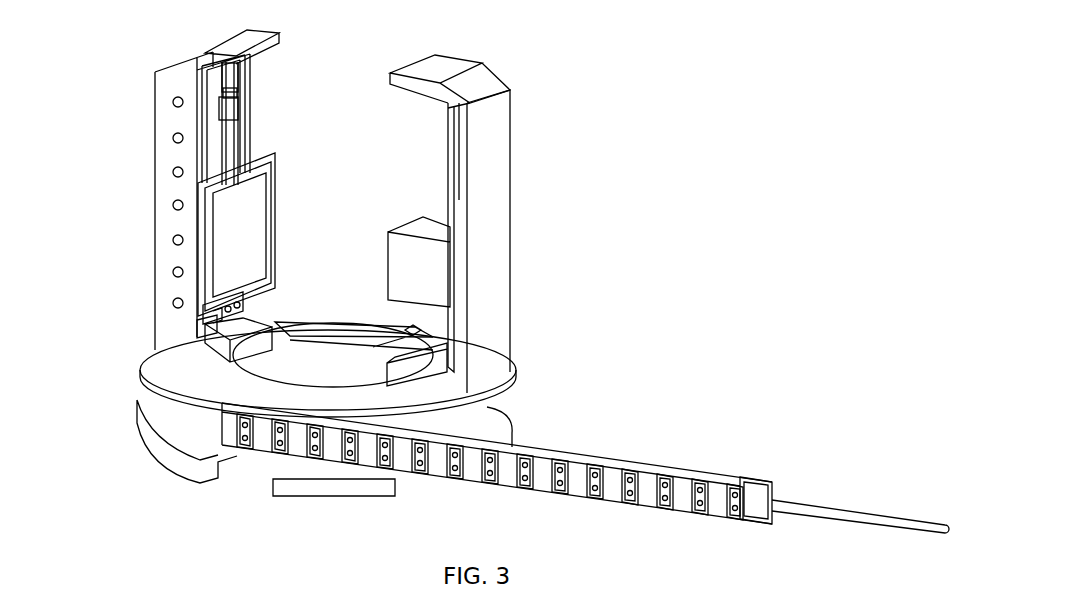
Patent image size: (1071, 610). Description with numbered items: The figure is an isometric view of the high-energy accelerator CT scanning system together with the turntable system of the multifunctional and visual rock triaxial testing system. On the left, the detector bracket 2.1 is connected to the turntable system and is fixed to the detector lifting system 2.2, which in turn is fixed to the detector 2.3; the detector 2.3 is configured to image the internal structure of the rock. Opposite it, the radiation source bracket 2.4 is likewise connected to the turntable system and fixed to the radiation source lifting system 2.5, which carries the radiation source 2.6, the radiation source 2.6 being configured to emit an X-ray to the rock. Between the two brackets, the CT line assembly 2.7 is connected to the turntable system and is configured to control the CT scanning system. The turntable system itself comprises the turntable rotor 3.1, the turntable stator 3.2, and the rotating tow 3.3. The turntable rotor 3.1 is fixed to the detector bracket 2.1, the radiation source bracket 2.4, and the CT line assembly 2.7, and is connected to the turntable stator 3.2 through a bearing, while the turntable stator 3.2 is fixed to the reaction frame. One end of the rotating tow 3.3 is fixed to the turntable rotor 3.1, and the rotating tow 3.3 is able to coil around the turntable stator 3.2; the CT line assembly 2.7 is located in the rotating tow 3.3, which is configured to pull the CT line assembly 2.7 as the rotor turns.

The detector bracket 2.1 is at (168, 291).
The detector lifting system 2.2 is at (227, 137).
The detector 2.3 is at (227, 247).
The radiation source bracket 2.4 is at (484, 340).
The radiation source lifting system 2.5 is at (458, 165).
The radiation source 2.6 is at (424, 270).
The CT line assembly 2.7 is at (381, 333).
The turntable rotor 3.1 is at (157, 388).
The turntable stator 3.2 is at (181, 447).
The rotating tow 3.3 is at (627, 471).